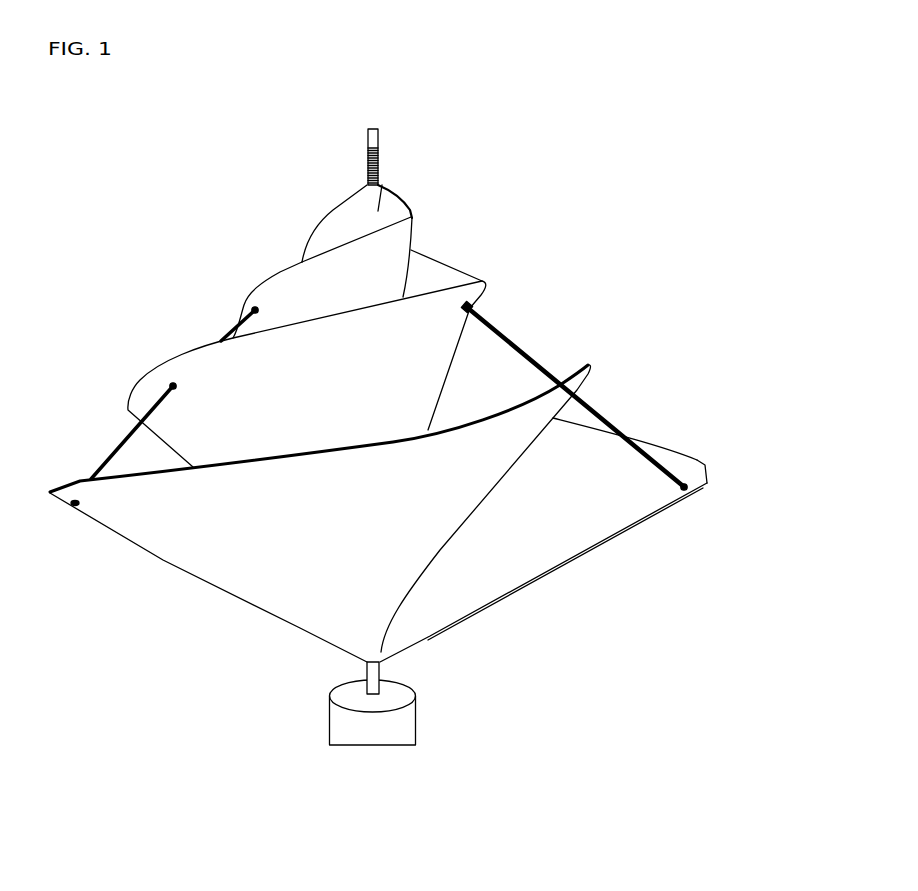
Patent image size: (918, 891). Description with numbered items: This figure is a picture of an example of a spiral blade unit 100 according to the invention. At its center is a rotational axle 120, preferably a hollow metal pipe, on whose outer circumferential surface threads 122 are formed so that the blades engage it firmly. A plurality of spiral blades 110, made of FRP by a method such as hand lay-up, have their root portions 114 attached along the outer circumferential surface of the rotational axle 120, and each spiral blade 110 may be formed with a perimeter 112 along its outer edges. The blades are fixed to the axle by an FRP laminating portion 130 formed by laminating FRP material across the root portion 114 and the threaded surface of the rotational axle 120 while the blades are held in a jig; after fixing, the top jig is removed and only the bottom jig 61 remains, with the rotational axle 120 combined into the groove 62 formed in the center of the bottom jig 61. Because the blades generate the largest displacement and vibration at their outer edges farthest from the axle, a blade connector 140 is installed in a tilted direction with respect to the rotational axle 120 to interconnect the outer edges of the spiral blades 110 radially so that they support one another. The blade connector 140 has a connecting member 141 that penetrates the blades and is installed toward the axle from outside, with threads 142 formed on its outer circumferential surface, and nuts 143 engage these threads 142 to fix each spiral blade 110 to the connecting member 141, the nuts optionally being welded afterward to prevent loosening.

The spiral blade unit 100 is at (156, 249).
The spiral blade 110 is at (408, 230).
The perimeter 112 is at (406, 203).
The root portion 114 is at (386, 190).
The rotational axle 120 is at (386, 134).
The threads 122 is at (381, 162).
The FRP laminating portion 130 is at (357, 215).
The blade connector 140 is at (389, 366).
The connecting member 141 is at (543, 367).
The threads 142 is at (474, 311).
The nut 143 is at (476, 307).
The bottom jig 61 is at (413, 726).
The groove 62 is at (381, 691).